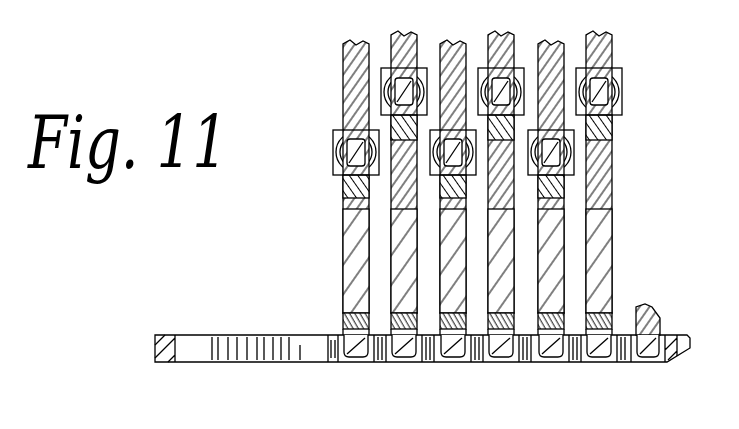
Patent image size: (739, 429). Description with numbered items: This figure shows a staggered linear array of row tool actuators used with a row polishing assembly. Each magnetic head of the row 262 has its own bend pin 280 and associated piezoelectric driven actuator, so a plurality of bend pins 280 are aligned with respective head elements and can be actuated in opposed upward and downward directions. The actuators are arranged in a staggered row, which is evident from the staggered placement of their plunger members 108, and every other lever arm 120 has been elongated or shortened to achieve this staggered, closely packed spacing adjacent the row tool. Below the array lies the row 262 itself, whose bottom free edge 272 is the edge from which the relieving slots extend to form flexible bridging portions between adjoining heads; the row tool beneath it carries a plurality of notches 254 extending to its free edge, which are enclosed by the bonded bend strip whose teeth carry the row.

The plunger member 108 is at (356, 151).
The lever arm 120 is at (612, 282).
The notch 254 is at (563, 353).
The row 262 is at (216, 330).
The bottom free edge 272 is at (490, 80).
The bend pin 280 is at (408, 350).